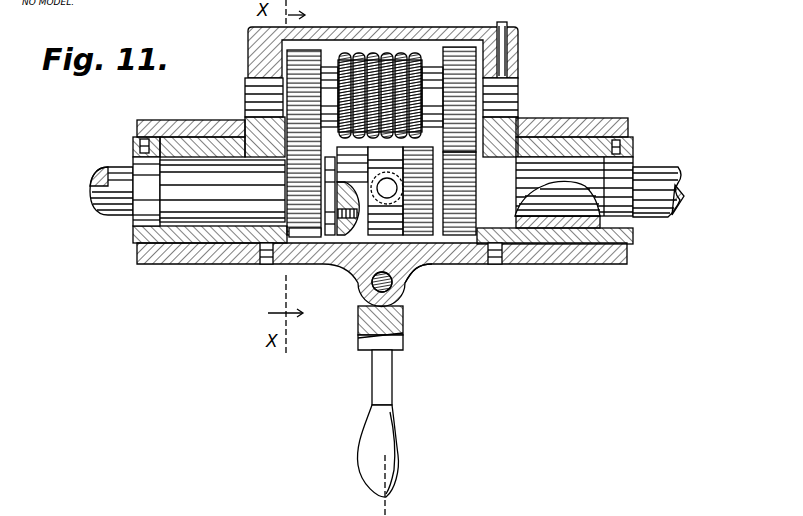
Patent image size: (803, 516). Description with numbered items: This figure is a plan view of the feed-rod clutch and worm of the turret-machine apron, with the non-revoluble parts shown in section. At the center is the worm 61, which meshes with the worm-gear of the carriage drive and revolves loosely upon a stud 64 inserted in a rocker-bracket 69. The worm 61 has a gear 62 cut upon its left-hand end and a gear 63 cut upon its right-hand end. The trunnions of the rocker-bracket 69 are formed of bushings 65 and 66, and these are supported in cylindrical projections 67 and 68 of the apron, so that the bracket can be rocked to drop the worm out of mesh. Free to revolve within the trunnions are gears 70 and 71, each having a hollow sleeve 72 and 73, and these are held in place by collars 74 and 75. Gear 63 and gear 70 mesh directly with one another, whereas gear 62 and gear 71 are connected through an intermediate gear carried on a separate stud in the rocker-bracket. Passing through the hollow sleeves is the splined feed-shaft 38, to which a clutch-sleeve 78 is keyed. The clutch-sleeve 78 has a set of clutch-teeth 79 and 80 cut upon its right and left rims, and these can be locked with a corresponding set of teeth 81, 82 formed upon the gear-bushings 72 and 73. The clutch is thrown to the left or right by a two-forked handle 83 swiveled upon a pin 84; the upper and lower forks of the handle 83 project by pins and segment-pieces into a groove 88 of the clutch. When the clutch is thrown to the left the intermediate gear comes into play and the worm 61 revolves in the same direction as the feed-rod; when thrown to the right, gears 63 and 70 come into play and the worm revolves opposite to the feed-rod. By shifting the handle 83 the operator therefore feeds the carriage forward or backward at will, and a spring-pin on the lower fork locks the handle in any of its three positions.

The splined feed-shaft 38 is at (652, 215).
The worm 61 is at (370, 55).
The gear 62 is at (305, 52).
The gear 63 is at (460, 47).
The stud 64 is at (516, 90).
The bushing 65 is at (196, 120).
The bushing 66 is at (548, 138).
The cylindrical projection 67 is at (152, 120).
The cylindrical projection 68 is at (595, 120).
The rocker-bracket 69 is at (413, 30).
The gear 70 is at (468, 242).
The gear 71 is at (303, 240).
The hollow sleeve 72 is at (545, 264).
The hollow sleeve 73 is at (214, 218).
The collar 74 is at (630, 248).
The collar 75 is at (135, 229).
The clutch-sleeve 78 is at (350, 238).
The clutch-teeth 79 is at (445, 240).
The clutch-teeth 80 is at (331, 236).
The teeth 81 is at (441, 272).
The teeth 82 is at (327, 240).
The two-forked handle 83 is at (397, 457).
The pin 84 is at (364, 303).
The groove 88 is at (389, 246).